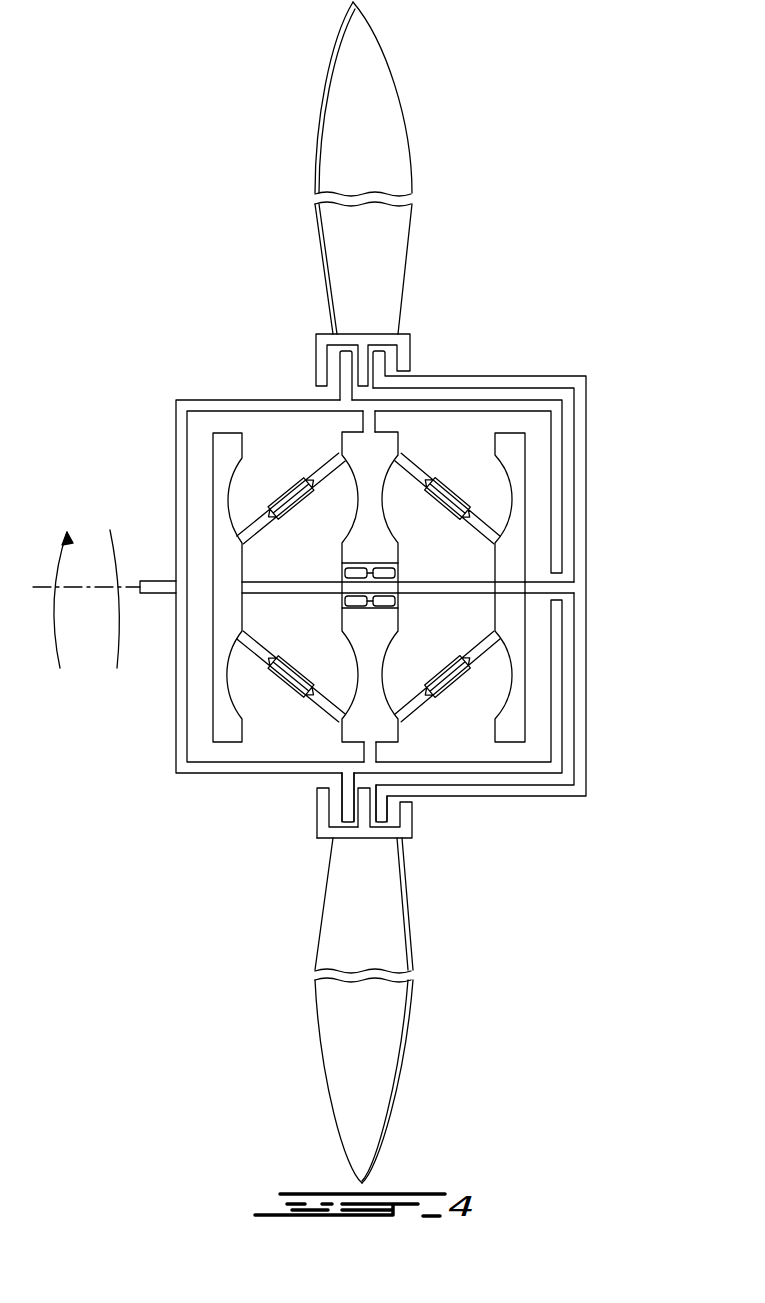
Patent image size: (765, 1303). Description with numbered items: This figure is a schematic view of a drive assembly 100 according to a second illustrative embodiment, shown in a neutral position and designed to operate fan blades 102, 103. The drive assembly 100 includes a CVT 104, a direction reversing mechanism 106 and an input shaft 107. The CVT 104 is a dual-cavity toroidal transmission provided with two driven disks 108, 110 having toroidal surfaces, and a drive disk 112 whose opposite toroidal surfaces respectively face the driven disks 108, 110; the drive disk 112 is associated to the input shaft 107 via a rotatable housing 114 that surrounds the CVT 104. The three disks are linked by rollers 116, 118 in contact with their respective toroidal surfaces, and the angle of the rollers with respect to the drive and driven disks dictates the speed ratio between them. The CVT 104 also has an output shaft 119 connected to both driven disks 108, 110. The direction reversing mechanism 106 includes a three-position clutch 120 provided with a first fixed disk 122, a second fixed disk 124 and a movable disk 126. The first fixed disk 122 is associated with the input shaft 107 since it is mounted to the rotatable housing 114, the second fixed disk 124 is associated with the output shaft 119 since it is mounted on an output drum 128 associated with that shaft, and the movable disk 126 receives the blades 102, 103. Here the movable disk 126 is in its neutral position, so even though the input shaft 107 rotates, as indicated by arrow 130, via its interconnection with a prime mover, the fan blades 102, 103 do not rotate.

The drive assembly 100 is at (545, 270).
The fan blades 102 is at (368, 58).
The second blade 103 is at (364, 1010).
The CVT 104 is at (527, 460).
The direction reversing mechanism 106 is at (415, 818).
The input shaft 107 is at (158, 594).
The driven disk 108 is at (230, 727).
The driven disk 110 is at (512, 727).
The drive disk 112 is at (353, 440).
The rotatable housing 114 is at (178, 417).
The roller 116 is at (317, 700).
The roller 118 is at (437, 667).
The output shaft 119 is at (557, 586).
The three-position clutch 120 is at (322, 810).
The first fixed disk 122 is at (352, 806).
The second fixed disk 124 is at (380, 812).
The movable disk 126 is at (403, 341).
The output drum 128 is at (588, 797).
The arrow 130 is at (60, 668).